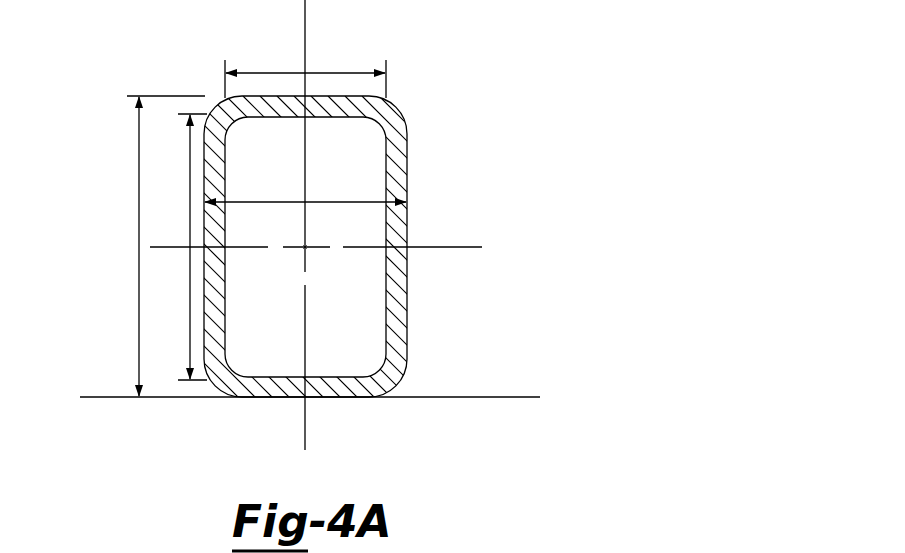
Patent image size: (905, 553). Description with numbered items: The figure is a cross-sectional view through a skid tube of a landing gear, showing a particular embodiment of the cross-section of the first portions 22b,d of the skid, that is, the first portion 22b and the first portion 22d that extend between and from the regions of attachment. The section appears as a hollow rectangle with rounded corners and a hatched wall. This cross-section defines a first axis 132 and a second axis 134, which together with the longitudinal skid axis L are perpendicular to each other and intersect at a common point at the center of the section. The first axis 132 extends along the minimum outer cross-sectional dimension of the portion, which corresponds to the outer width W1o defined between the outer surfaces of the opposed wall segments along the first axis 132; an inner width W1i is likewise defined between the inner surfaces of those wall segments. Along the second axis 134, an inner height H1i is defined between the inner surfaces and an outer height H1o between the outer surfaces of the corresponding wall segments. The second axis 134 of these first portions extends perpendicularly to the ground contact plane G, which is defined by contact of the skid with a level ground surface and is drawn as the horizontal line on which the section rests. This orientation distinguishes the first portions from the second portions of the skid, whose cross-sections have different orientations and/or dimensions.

The first portions of the skid 22b,d is at (353, 207).
The first portion of the skid 22b is at (353, 207).
The first portion of the skid 22d is at (462, 75).
The first axis 132 is at (457, 247).
The second axis 134 is at (308, 415).
The longitudinal skid axis L is at (305, 247).
The ground contact plane G is at (507, 397).
The inner width W1i is at (322, 73).
The outer width W1o is at (373, 200).
The outer height H1o is at (139, 168).
The inner height H1i is at (190, 207).